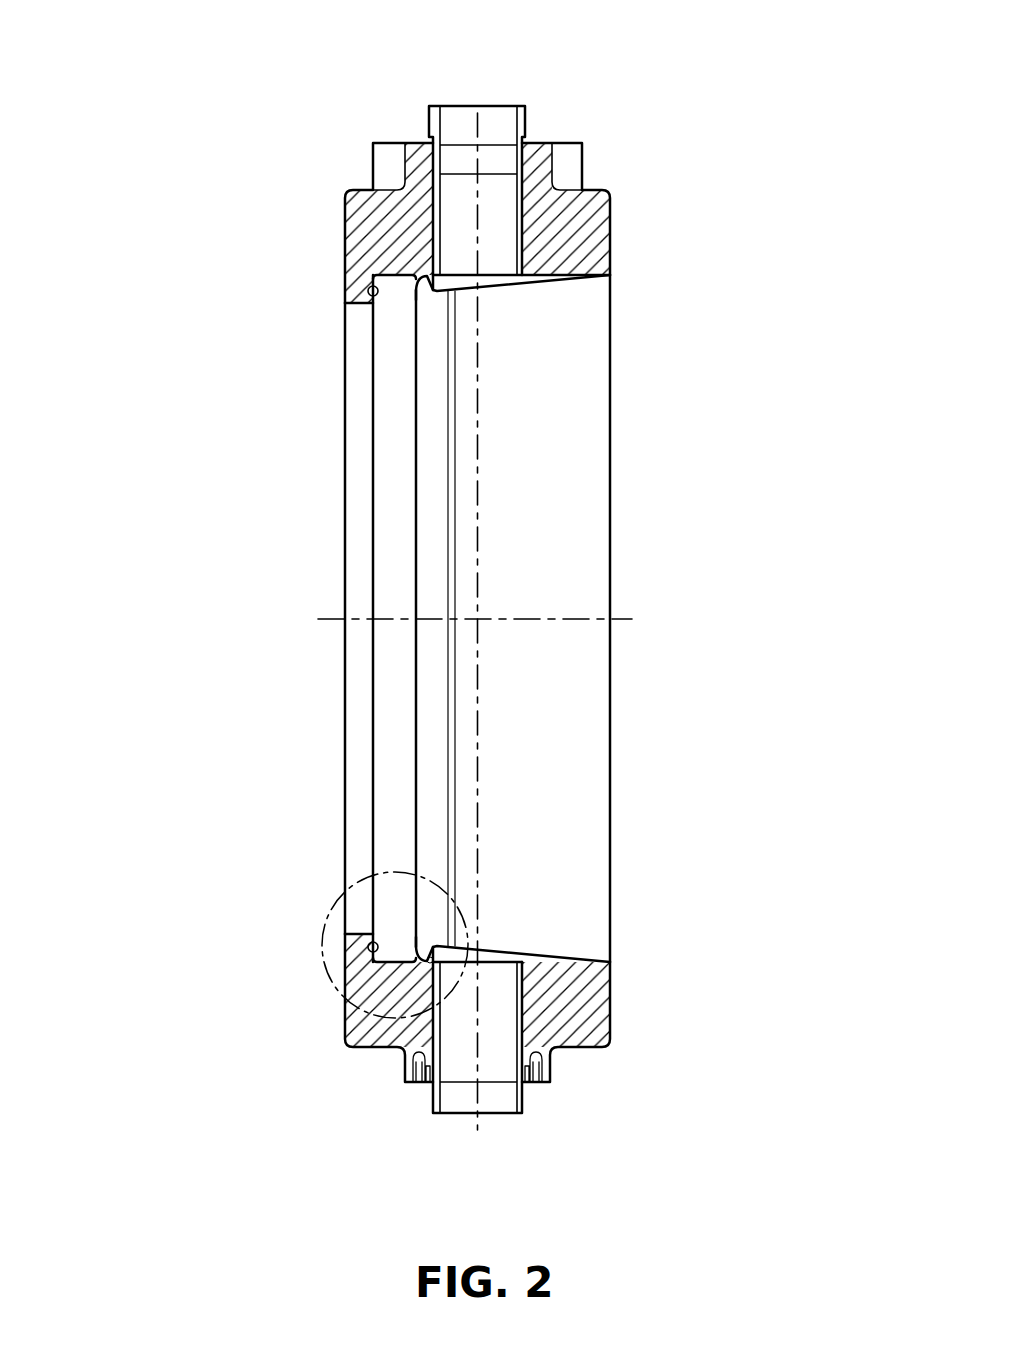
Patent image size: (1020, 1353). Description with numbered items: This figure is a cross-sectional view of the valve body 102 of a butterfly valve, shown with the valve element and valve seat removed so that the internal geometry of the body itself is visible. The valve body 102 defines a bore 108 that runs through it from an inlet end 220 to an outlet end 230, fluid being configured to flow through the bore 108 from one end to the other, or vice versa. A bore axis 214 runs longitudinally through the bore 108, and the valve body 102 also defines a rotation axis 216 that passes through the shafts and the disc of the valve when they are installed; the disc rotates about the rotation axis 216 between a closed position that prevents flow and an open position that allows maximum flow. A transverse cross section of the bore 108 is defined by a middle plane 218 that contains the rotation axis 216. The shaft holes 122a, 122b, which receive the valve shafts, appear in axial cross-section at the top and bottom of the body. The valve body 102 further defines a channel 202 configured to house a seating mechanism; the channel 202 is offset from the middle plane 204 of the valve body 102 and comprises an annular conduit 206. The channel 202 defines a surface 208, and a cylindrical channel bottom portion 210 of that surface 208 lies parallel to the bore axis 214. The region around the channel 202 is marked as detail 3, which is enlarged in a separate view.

The valve body 102 is at (362, 228).
The bore 108 is at (583, 415).
The shaft hole 122a is at (500, 205).
The shaft hole 122b is at (498, 1042).
The channel 202 is at (390, 944).
The middle plane 204 is at (479, 769).
The annular conduit 206 is at (430, 985).
The surface 208 is at (403, 277).
The cylindrical channel bottom portion 210 is at (405, 277).
The bore axis 214 is at (541, 618).
The rotation axis 216 is at (477, 559).
The middle plane 218 is at (477, 667).
The inlet end 220 is at (610, 310).
The outlet end 230 is at (345, 434).
The detail 3 is at (323, 981).